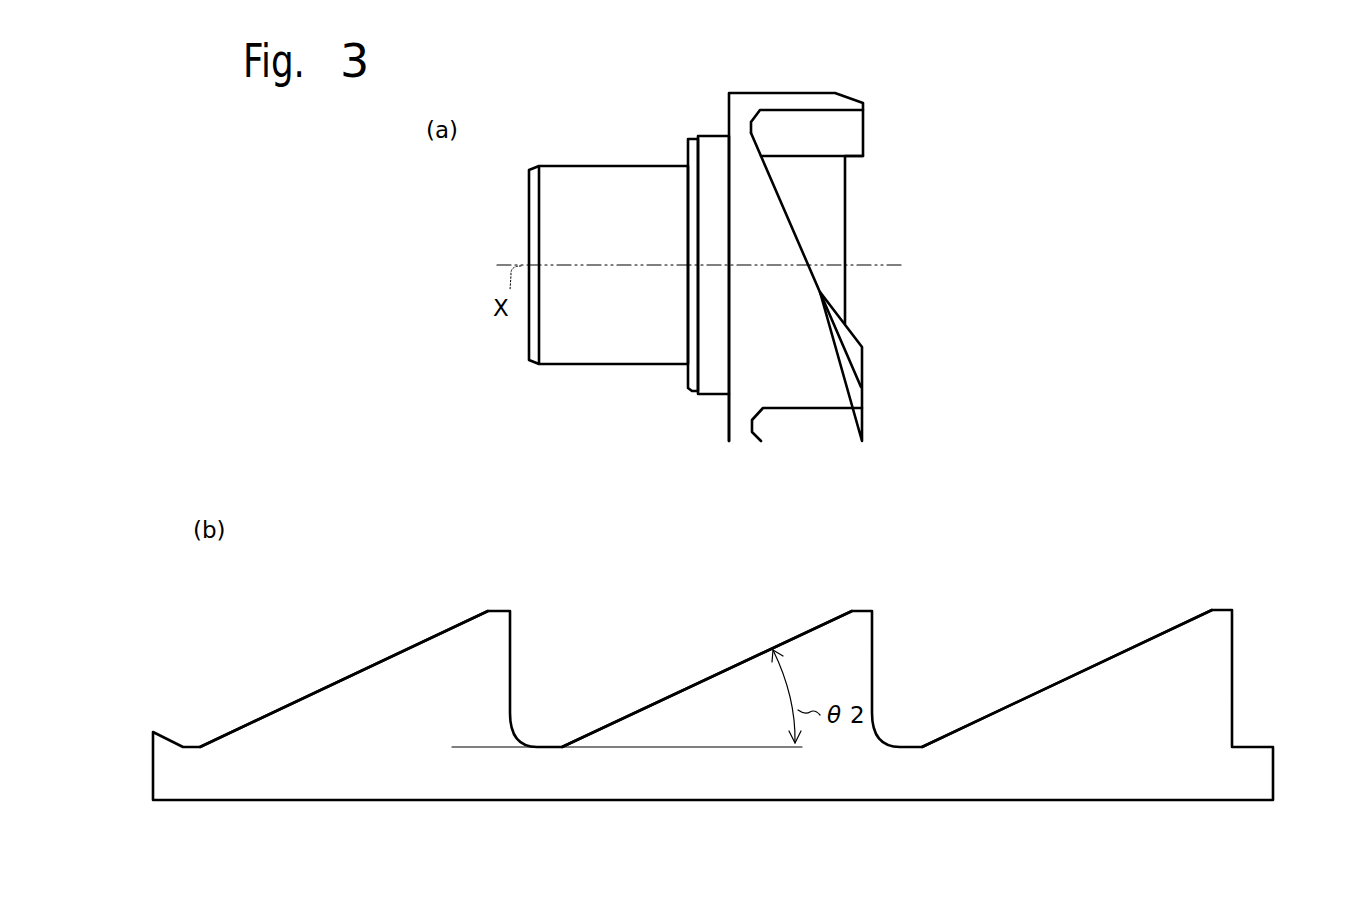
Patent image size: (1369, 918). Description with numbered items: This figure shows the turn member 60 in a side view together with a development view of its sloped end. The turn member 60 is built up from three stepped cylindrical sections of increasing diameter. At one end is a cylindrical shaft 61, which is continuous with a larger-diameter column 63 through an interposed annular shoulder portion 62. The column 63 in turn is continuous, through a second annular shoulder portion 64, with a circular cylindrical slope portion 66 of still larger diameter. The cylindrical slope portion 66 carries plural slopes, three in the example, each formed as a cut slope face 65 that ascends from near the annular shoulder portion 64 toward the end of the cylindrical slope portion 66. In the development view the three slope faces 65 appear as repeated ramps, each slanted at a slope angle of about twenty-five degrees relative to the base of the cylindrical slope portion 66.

The turn member 60 is at (950, 104).
The cylindrical shaft 61 is at (557, 175).
The annular shoulder portion 62 is at (685, 150).
The column 63 is at (722, 143).
The annular shoulder portion 64 is at (728, 415).
The slope face 65 is at (805, 243).
The cylindrical slope portion 66 is at (797, 393).